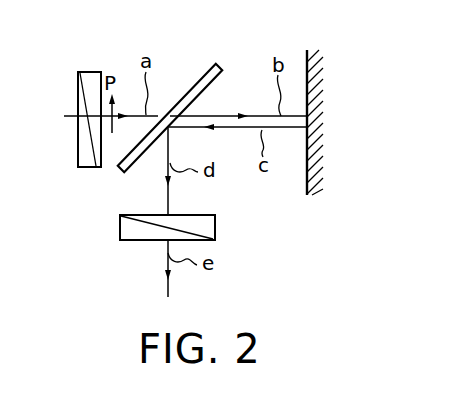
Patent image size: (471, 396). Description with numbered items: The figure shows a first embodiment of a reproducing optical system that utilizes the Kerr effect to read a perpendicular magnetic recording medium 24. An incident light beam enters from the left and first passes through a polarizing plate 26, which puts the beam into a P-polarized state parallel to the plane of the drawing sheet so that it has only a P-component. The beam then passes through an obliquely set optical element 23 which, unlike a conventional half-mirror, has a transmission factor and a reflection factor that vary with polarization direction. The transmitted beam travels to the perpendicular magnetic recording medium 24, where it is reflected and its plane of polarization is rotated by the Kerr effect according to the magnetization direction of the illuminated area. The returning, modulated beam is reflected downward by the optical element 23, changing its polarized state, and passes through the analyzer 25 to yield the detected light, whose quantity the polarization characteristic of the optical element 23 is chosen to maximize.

The optical element 23 is at (219, 63).
The perpendicular magnetic recording medium 24 is at (318, 70).
The analyzer 25 is at (216, 228).
The polarizing plate 26 is at (94, 71).